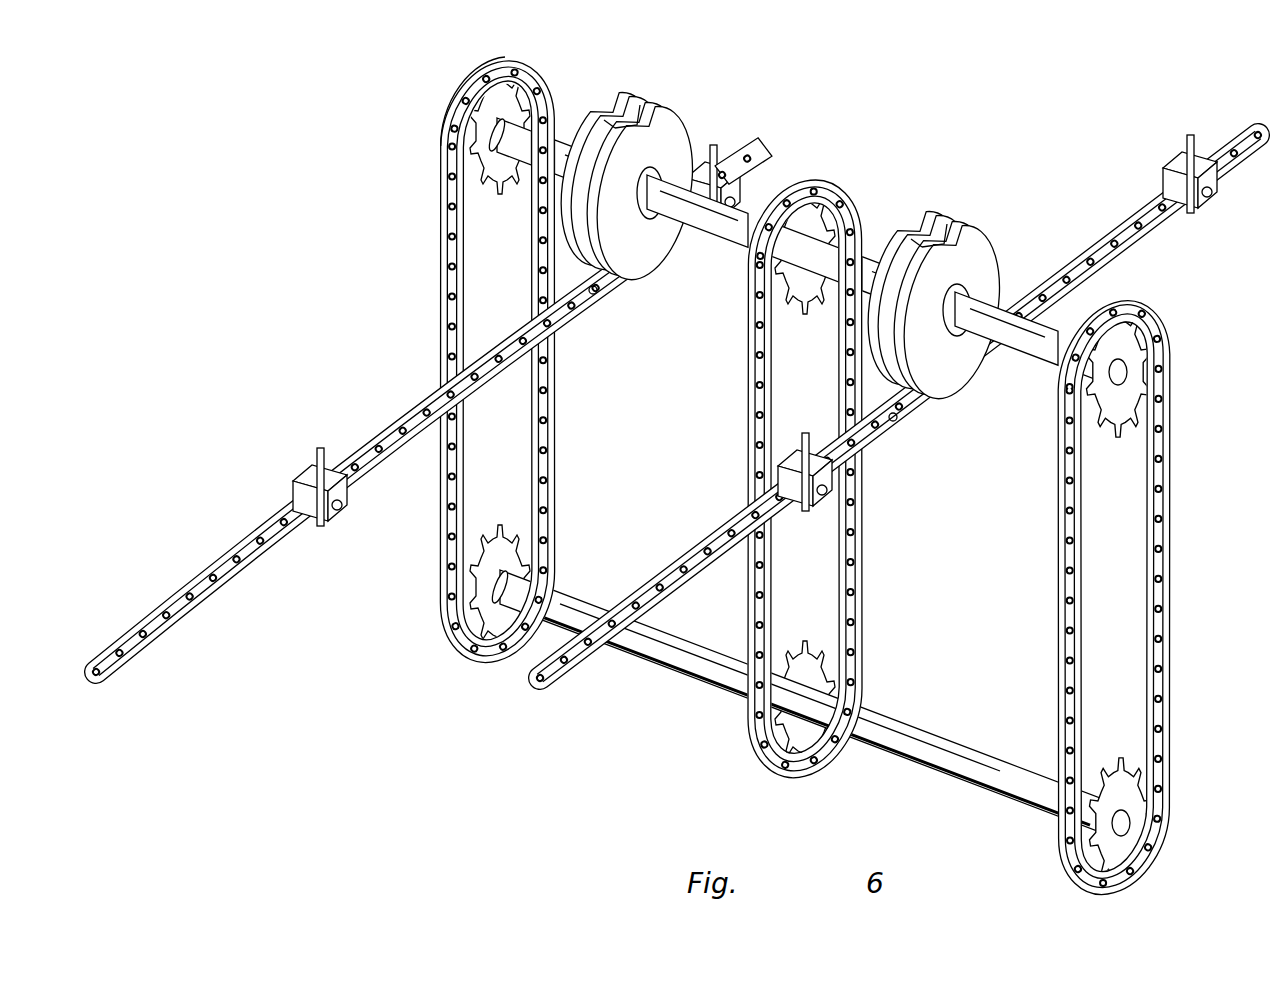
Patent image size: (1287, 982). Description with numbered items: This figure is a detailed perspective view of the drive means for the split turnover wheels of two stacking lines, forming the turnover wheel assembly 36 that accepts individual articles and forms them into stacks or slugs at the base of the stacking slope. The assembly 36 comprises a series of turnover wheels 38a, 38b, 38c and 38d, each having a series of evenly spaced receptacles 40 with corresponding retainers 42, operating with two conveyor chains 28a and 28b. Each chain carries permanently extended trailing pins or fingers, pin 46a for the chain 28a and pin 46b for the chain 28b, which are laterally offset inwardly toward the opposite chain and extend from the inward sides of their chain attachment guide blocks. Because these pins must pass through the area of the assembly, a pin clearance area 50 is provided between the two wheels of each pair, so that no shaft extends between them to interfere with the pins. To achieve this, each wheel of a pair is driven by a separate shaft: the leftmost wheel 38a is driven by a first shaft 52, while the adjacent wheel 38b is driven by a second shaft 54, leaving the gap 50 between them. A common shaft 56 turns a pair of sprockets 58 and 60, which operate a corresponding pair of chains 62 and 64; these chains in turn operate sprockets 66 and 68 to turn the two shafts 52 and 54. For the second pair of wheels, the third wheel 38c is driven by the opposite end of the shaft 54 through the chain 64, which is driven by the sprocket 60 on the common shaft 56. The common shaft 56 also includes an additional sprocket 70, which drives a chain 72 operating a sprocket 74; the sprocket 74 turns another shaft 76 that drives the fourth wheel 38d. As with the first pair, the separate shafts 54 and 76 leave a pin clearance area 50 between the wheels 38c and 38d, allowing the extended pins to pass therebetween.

The chain 28a is at (196, 577).
The chain 28b is at (696, 552).
The turnover wheel assembly 36 is at (677, 457).
The turnover wheel 38a is at (637, 92).
The turnover wheel 38b is at (688, 122).
The turnover wheel 38c is at (943, 212).
The turnover wheel 38d is at (995, 240).
The receptacle 40 is at (611, 127).
The retainer 42 is at (633, 107).
The trailing pin 46a is at (313, 465).
The trailing pin 46b is at (757, 455).
The pin clearance area 50 is at (593, 292).
The first shaft 52 is at (513, 185).
The second shaft 54 is at (713, 250).
The common shaft 56 is at (693, 668).
The sprocket 58 is at (482, 635).
The sprocket 60 is at (808, 740).
The chain 62 is at (445, 287).
The chain 64 is at (866, 548).
The sprocket 66 is at (458, 120).
The sprocket 68 is at (828, 212).
The sprocket 70 is at (1075, 840).
The chain 72 is at (1060, 609).
The sprocket 74 is at (1140, 372).
The shaft 76 is at (1033, 365).